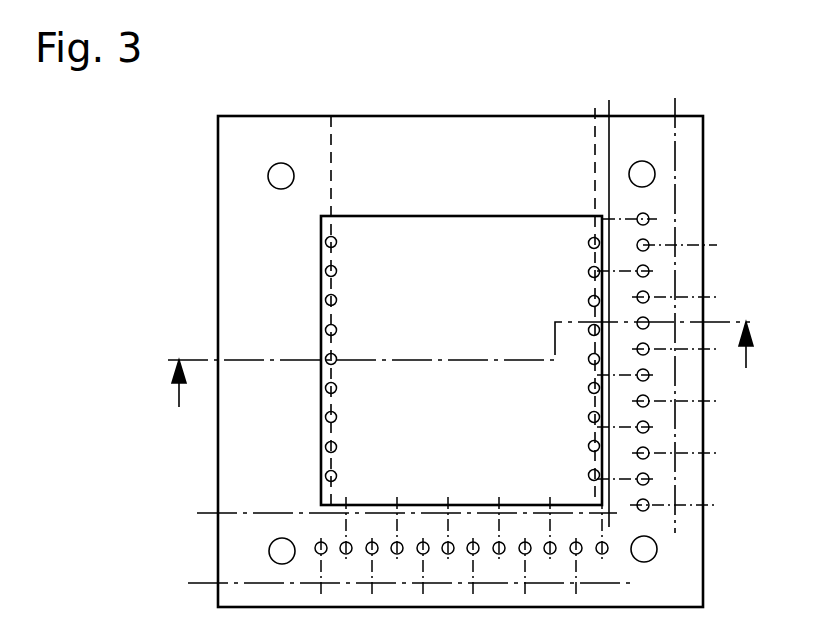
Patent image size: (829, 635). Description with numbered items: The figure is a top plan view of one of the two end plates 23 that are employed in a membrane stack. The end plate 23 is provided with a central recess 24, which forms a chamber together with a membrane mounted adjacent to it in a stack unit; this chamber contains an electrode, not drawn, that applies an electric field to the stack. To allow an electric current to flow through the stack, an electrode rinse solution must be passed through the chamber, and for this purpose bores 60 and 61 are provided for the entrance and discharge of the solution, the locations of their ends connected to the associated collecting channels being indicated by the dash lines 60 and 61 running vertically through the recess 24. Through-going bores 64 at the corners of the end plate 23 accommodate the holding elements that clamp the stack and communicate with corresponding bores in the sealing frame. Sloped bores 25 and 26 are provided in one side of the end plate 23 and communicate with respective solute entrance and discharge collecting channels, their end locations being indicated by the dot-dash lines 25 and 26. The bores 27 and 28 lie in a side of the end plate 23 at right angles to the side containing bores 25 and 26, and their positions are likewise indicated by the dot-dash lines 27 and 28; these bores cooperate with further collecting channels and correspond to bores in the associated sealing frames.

The end plate 23 is at (677, 551).
The recess 24 is at (398, 463).
The bore 25 is at (609, 100).
The bore 26 is at (675, 98).
The bore 27 is at (197, 513).
The bore 28 is at (190, 583).
The bore 60 is at (331, 116).
The bore 61 is at (595, 108).
The through-going bore 64 is at (282, 176).